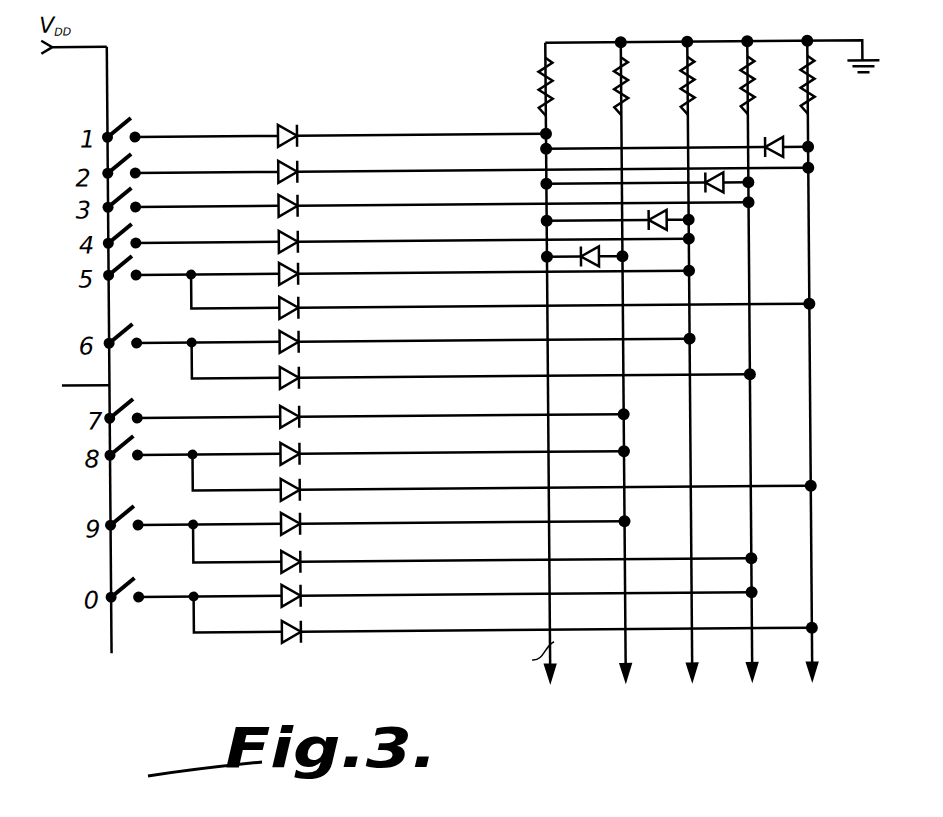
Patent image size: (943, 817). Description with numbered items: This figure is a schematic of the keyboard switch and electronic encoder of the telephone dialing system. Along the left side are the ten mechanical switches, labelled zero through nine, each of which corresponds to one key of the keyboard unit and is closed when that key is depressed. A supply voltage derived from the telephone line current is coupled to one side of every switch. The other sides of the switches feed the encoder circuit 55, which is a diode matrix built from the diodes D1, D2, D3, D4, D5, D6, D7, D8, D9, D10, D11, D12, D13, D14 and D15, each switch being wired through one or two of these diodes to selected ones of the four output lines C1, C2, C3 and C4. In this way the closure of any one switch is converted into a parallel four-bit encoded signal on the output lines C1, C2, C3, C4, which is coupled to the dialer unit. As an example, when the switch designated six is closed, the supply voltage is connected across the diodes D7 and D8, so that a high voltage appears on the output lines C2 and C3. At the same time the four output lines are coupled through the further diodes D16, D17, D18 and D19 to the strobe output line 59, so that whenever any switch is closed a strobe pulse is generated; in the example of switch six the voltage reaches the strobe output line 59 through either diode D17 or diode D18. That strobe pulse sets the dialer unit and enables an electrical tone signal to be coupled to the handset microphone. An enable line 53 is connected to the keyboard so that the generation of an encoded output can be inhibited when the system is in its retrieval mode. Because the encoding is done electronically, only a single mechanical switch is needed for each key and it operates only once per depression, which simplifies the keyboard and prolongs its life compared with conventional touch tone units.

The enable line 53 is at (71, 391).
The encoder circuit 55 is at (816, 158).
The strobe output line 59 is at (555, 659).
The diode D1 is at (305, 129).
The diode D2 is at (305, 165).
The diode D3 is at (305, 199).
The diode D4 is at (306, 235).
The diode D5 is at (306, 267).
The diode D6 is at (306, 301).
The diode D7 is at (306, 335).
The diode D8 is at (307, 371).
The diode D9 is at (307, 410).
The diode D10 is at (310, 447).
The diode D11 is at (311, 483).
The diode D12 is at (311, 517).
The diode D13 is at (311, 555).
The diode D14 is at (311, 589).
The diode D15 is at (312, 625).
The diode D16 is at (769, 135).
The diode D17 is at (711, 199).
The diode D18 is at (648, 237).
The diode D19 is at (578, 271).
The output line C1 is at (630, 379).
The output line C2 is at (695, 379).
The output line C3 is at (755, 376).
The output line C4 is at (813, 375).